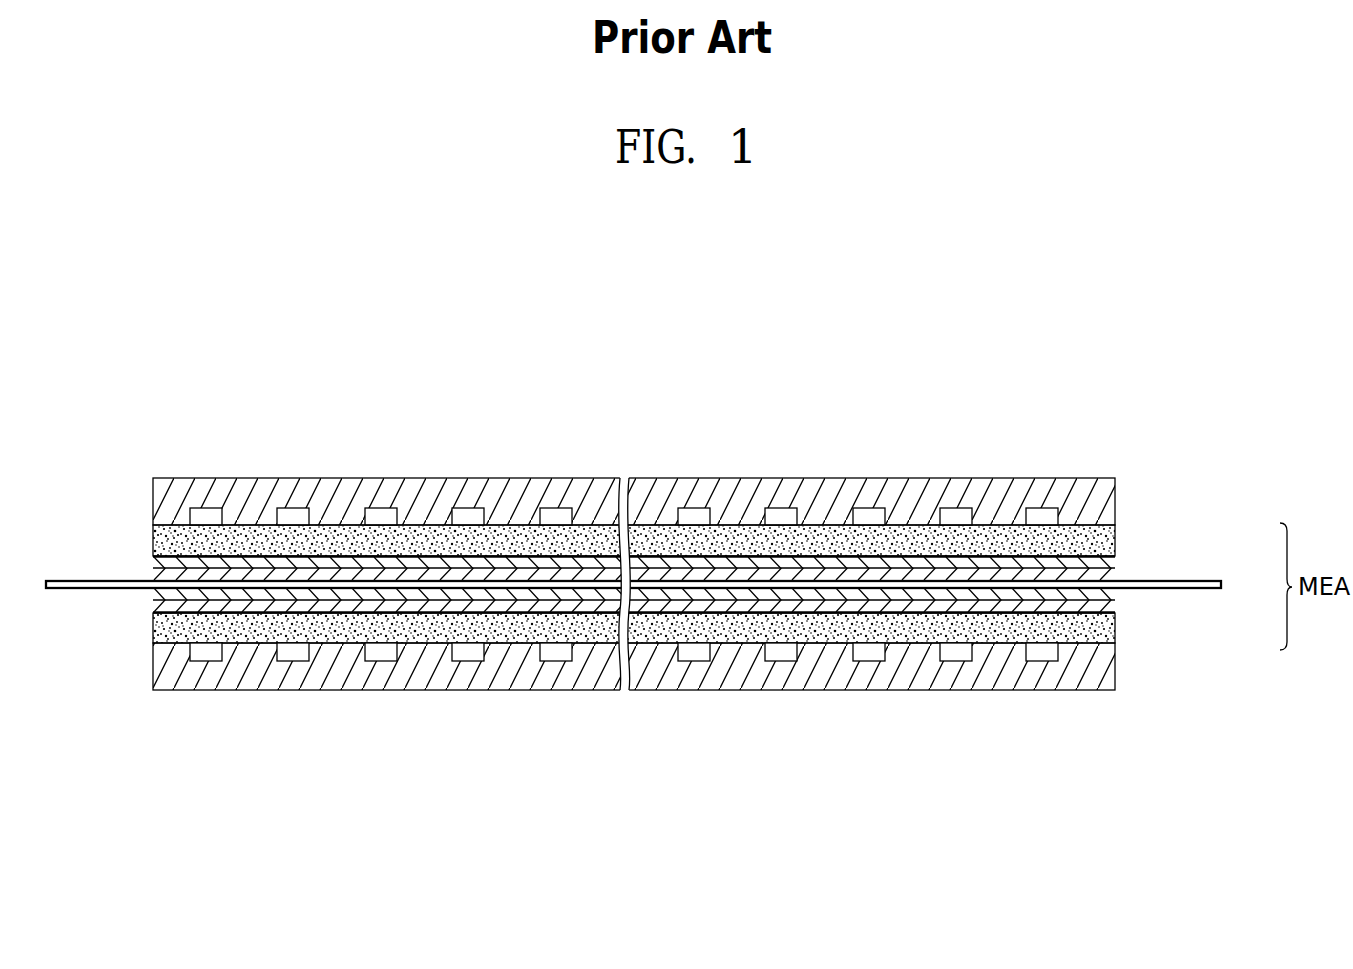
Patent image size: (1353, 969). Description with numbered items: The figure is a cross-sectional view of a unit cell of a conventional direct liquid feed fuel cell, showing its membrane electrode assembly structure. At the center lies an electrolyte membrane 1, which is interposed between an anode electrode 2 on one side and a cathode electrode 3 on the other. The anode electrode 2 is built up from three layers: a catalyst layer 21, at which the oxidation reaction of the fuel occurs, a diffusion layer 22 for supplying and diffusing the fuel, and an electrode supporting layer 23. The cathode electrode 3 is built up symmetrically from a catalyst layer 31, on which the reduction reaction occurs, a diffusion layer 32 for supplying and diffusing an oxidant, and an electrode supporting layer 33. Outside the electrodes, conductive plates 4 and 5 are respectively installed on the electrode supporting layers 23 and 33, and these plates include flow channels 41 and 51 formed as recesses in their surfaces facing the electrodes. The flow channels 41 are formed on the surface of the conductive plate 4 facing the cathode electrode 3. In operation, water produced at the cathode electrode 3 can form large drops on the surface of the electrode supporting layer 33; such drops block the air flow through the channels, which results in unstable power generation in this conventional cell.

The electrolyte membrane 1 is at (1223, 587).
The anode electrode 2 is at (713, 535).
The catalyst layer 21 is at (1097, 578).
The diffusion layer 22 is at (1097, 562).
The electrode supporting layer 23 is at (1100, 536).
The cathode electrode 3 is at (713, 637).
The catalyst layer 31 is at (1097, 597).
The diffusion layer 32 is at (1097, 612).
The electrode supporting layer 33 is at (1098, 637).
The conductive plate 4 is at (982, 672).
The flow channels 41 is at (870, 653).
The conductive plate 5 is at (983, 493).
The flow channels 51 is at (867, 515).